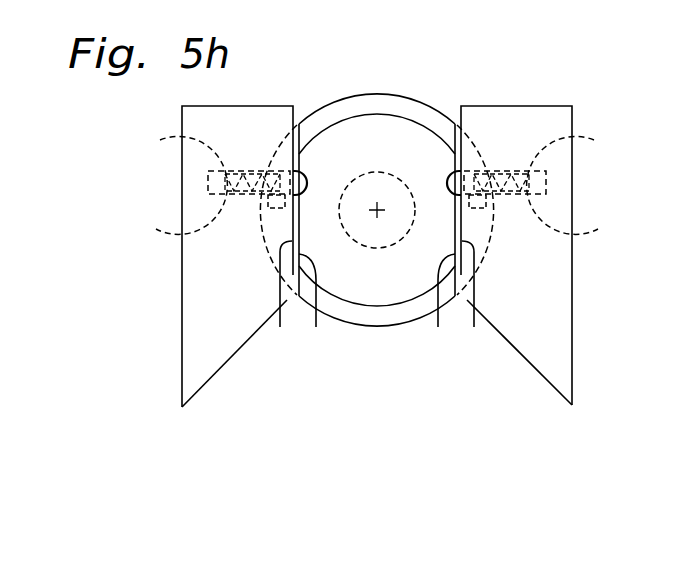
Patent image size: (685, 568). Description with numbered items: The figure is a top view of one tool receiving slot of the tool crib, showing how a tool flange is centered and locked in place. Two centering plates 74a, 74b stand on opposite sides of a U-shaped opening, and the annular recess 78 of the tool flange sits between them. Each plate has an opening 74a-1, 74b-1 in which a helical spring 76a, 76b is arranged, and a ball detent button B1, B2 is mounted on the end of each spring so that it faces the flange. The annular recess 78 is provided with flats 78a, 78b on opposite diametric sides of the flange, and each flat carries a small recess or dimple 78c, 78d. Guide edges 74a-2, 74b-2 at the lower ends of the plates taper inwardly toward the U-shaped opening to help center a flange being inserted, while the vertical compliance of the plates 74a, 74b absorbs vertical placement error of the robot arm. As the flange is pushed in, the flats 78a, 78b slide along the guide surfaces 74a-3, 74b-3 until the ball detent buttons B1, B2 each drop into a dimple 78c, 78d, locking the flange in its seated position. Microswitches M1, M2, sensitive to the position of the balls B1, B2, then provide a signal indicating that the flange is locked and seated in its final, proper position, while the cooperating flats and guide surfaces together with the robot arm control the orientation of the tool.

The annular recess 78 is at (377, 195).
The flat 78a is at (303, 297).
The flat 78b is at (451, 297).
The dimple 78c is at (308, 177).
The dimple 78d is at (446, 177).
The ball detent button B1 is at (329, 127).
The ball detent button B2 is at (424, 127).
The microswitch M1 is at (262, 218).
The microswitch M2 is at (492, 218).
The centering plate 74a is at (198, 271).
The centering plate 74b is at (556, 270).
The opening 74a-1 is at (160, 228).
The opening 74b-1 is at (598, 229).
The guide edge 74a-2 is at (203, 385).
The guide edge 74b-2 is at (553, 383).
The guide surface 74a-3 is at (280, 327).
The guide surface 74b-3 is at (475, 327).
The helical spring 76a is at (170, 178).
The helical spring 76b is at (586, 177).